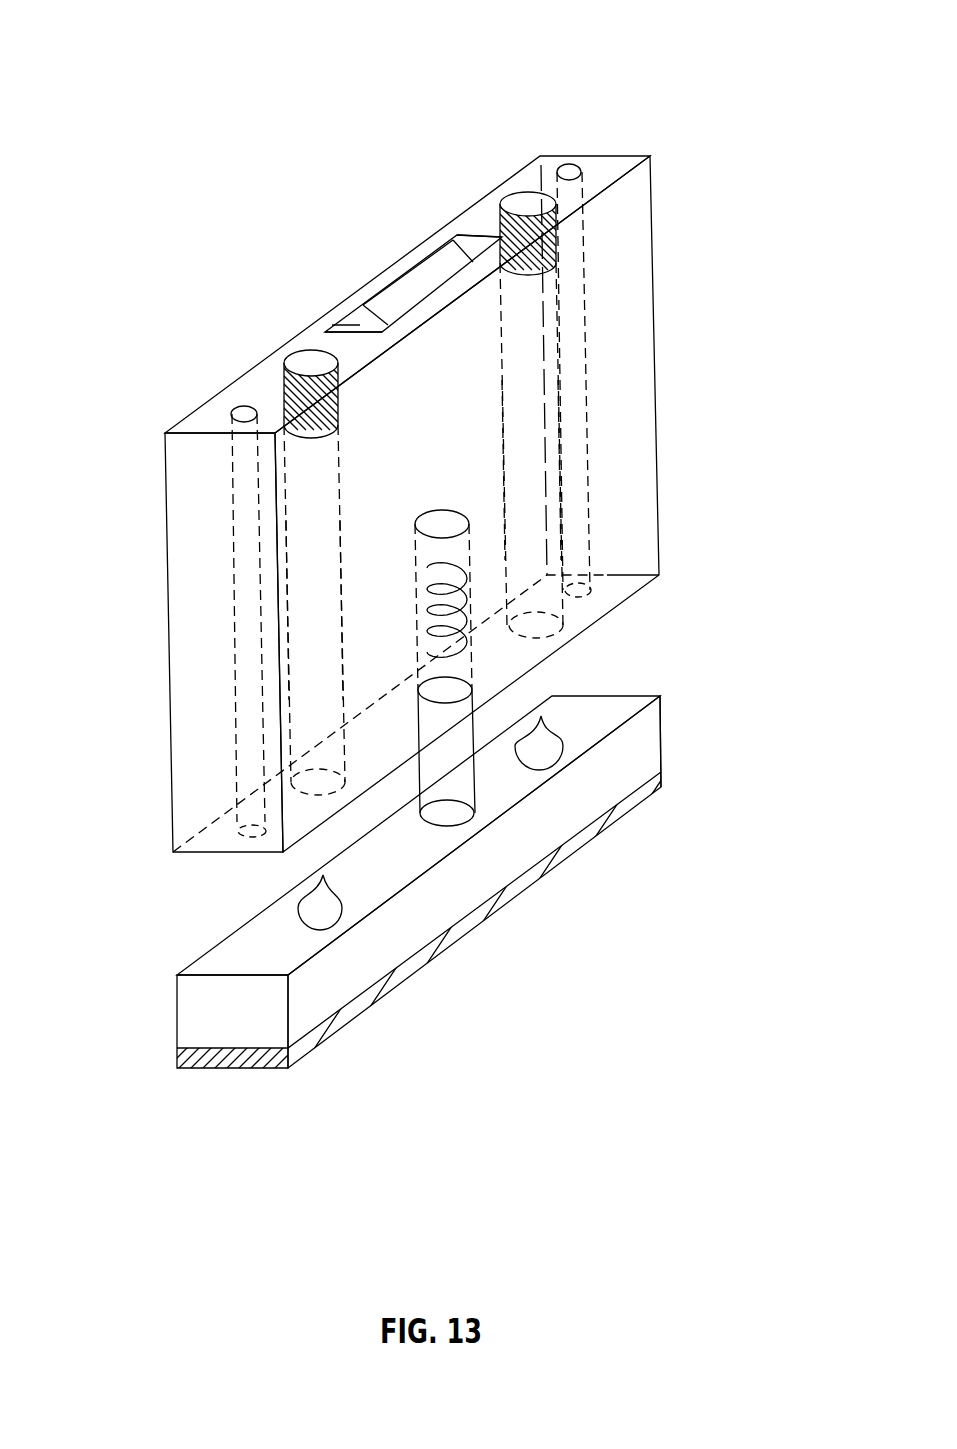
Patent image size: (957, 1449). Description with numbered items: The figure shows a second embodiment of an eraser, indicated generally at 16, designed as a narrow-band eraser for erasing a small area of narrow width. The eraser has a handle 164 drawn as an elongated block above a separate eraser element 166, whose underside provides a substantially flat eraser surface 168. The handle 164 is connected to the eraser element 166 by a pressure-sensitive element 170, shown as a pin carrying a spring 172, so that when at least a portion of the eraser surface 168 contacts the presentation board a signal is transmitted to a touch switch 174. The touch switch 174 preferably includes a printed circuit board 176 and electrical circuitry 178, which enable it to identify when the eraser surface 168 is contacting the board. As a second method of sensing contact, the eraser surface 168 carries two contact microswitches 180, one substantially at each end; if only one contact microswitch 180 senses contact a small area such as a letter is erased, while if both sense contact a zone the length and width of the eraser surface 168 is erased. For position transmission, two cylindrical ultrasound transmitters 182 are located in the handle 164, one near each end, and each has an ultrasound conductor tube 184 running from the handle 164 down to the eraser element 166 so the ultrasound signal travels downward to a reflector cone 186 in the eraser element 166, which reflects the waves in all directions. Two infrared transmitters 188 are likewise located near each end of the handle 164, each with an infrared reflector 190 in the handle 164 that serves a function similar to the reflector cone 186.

The assembly 16 is at (225, 107).
The handle 164 is at (502, 182).
The eraser element 166 is at (613, 696).
The eraser surface 168 is at (663, 748).
The pressure-sensitive element 170 is at (458, 745).
The spring 172 is at (472, 590).
The touch switch 174 is at (398, 293).
The printed circuit board 176 is at (333, 322).
The electrical circuitry 178 is at (468, 245).
The contact microswitch 180 is at (665, 783).
The cylindrical ultrasound transmitter 182 is at (300, 360).
The ultrasound conductor tube 184 is at (315, 670).
The reflector cone 186 is at (550, 753).
The infrared transmitter 188 is at (243, 410).
The infrared reflector 190 is at (257, 838).